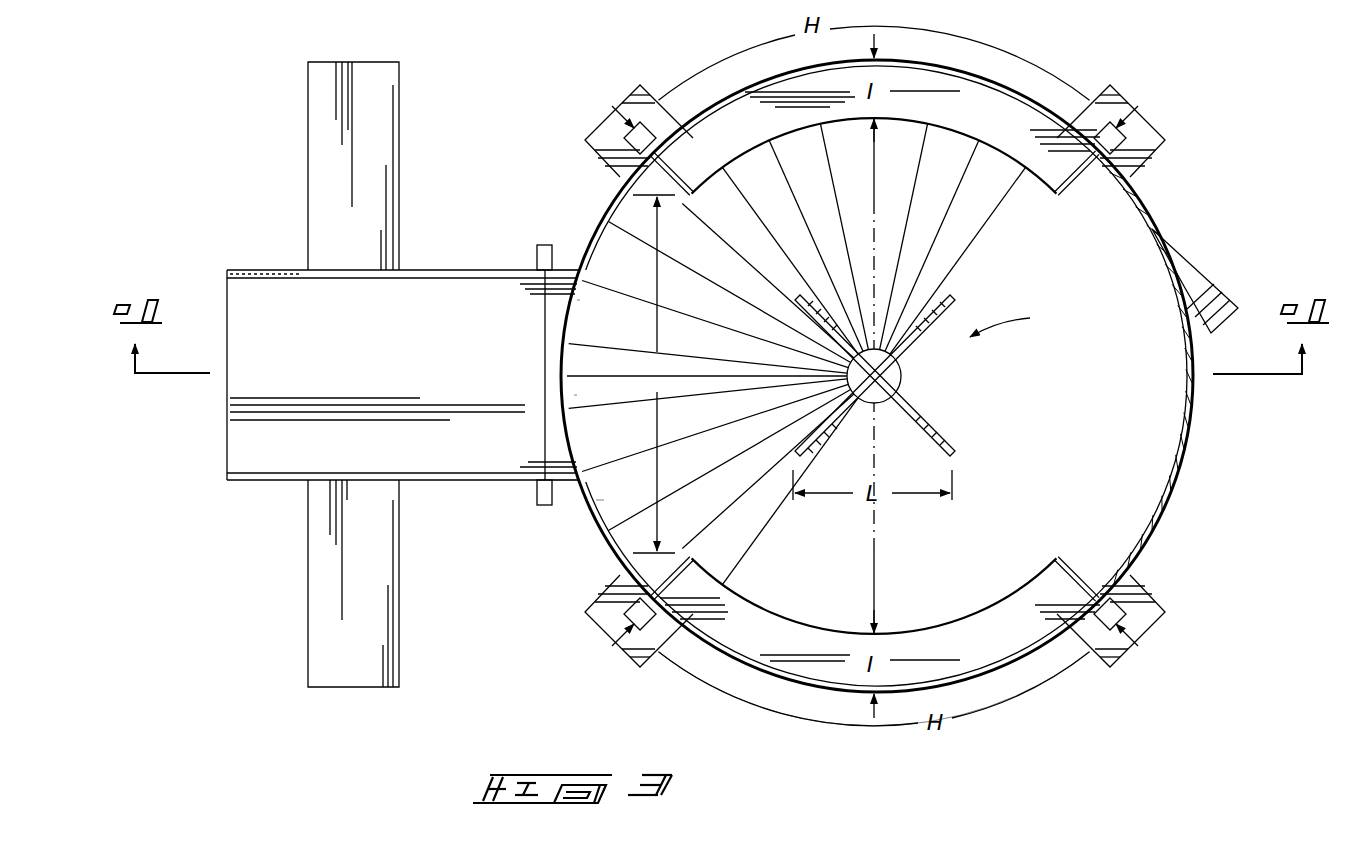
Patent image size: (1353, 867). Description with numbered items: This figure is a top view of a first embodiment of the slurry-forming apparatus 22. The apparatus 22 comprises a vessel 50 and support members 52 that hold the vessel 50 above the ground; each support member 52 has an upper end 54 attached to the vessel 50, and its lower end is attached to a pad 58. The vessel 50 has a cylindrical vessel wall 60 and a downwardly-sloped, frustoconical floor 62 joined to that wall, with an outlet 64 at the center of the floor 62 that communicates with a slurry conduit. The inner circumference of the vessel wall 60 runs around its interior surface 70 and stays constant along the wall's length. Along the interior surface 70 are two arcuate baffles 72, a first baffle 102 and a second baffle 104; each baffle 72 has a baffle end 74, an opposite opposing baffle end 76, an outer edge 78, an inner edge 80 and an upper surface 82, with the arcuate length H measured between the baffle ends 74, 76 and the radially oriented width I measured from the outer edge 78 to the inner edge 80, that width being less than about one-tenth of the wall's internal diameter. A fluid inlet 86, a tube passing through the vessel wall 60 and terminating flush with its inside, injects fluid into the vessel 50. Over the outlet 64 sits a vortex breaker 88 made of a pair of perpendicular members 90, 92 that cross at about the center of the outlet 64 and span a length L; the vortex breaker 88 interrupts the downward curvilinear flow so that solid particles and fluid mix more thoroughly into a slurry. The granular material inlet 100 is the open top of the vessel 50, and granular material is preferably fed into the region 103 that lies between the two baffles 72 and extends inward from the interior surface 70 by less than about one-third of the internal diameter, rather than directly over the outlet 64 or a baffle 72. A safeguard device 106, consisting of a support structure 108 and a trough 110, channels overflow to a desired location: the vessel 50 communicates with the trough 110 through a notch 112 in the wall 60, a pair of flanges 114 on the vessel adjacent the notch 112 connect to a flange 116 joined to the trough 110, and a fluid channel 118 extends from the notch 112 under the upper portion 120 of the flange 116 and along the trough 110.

The slurry-forming apparatus 22 is at (1025, 738).
The vessel 50 is at (1184, 505).
The support members 52 is at (655, 106).
The upper end 54 is at (610, 143).
The pads 58 is at (614, 108).
The cylindrical vessel wall 60 is at (1194, 422).
The downwardly-sloped floor 62 is at (1140, 360).
The outlet 64 is at (892, 377).
The interior surface 70 is at (588, 470).
The baffles 72 is at (1047, 192).
The baffle end 74 is at (703, 522).
The opposite opposing baffle end 76 is at (693, 197).
The outer edge 78 is at (932, 86).
The inner edge 80 is at (893, 128).
The upper surface 82 is at (795, 128).
The fluid inlet 86 is at (1199, 283).
The vortex breaker 88 is at (1028, 324).
The perpendicular member 90 is at (923, 312).
The perpendicular member 92 is at (927, 440).
The granular material inlet 100 is at (600, 502).
The first baffle 102 is at (993, 126).
The region 103 is at (654, 374).
The second baffle 104 is at (797, 628).
The safeguard device 106 is at (222, 437).
The support structure 108 is at (308, 622).
The trough 110 is at (228, 270).
The notch 112 is at (571, 392).
The flanges 114 is at (568, 260).
The flange 116 is at (537, 252).
The fluid channel 118 is at (573, 342).
The upper portion 120 is at (556, 382).